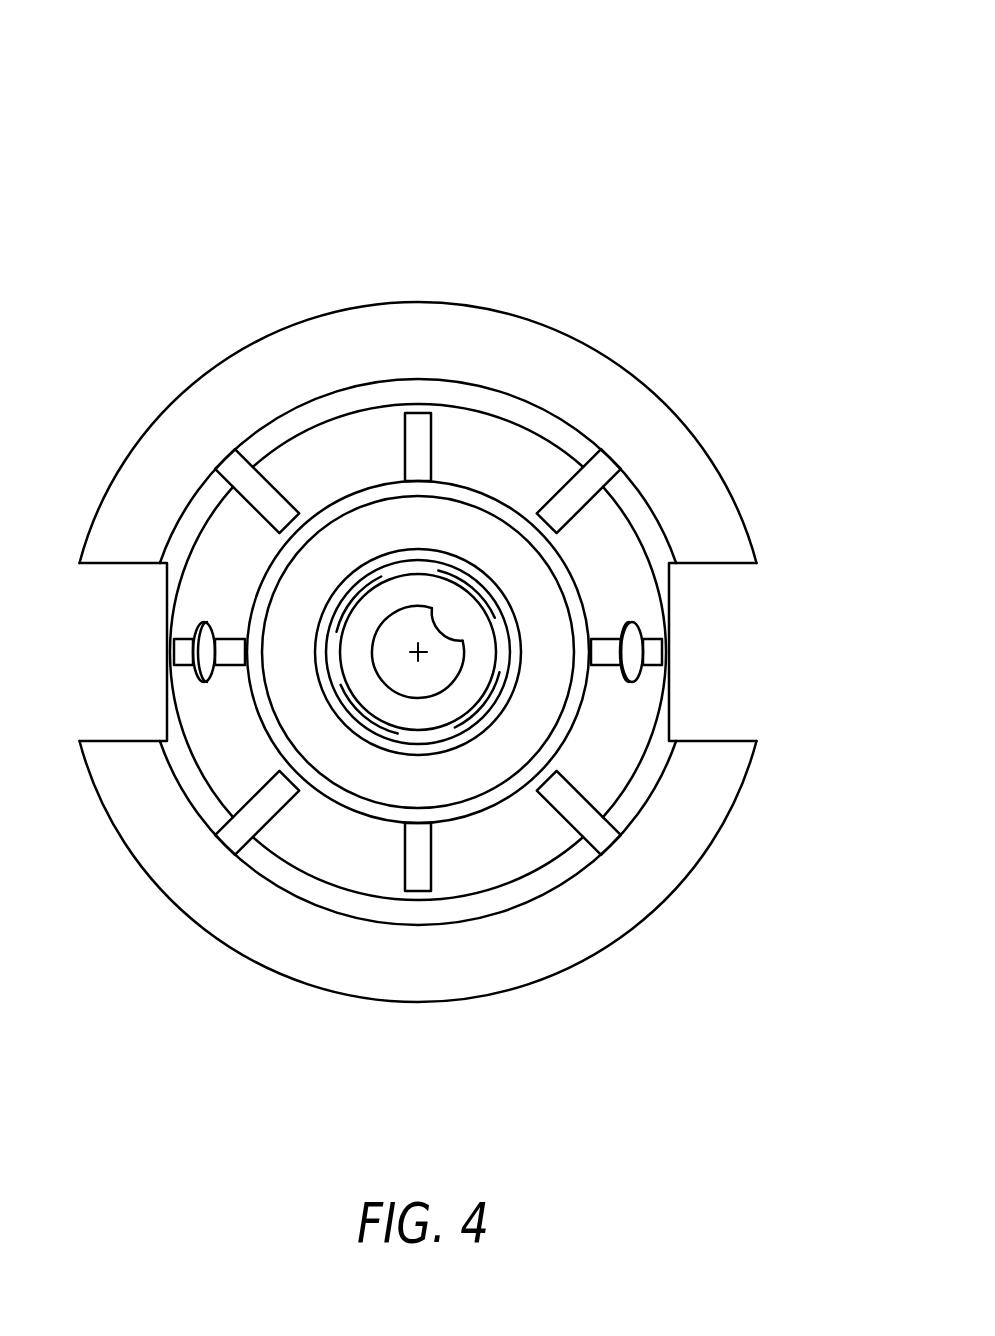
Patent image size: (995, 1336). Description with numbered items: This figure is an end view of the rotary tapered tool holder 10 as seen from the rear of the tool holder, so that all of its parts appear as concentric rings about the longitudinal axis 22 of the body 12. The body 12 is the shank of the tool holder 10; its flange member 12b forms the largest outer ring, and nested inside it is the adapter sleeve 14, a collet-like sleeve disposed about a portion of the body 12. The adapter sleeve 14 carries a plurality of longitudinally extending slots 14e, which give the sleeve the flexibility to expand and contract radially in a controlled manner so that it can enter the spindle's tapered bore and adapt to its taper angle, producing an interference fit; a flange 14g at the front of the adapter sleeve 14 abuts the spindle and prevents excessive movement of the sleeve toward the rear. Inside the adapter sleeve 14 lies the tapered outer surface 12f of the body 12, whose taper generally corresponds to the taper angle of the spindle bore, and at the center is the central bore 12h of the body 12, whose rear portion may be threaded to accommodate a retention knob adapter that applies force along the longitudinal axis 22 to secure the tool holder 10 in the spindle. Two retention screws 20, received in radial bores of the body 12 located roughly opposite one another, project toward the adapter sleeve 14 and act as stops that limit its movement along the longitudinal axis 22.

The rotary tapered tool holder 10 is at (631, 104).
The body 12 is at (493, 452).
The flange member 12b is at (372, 303).
The tapered outer surface 12f is at (372, 527).
The central bore 12h is at (455, 640).
The adapter sleeve 14 is at (210, 597).
The slots 14e is at (611, 462).
The flange 14g is at (267, 435).
The retention screw 20 is at (204, 656).
The longitudinal axis 22 is at (417, 658).